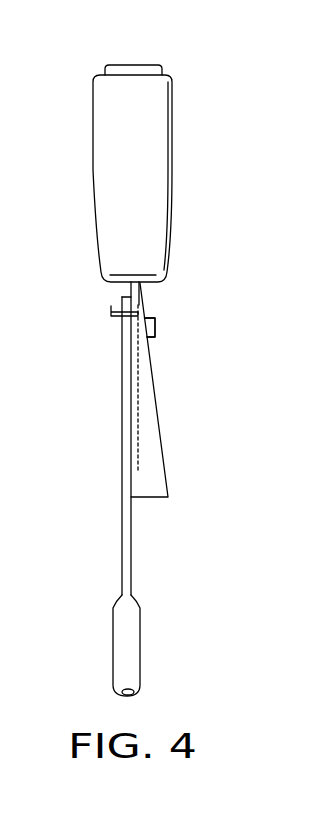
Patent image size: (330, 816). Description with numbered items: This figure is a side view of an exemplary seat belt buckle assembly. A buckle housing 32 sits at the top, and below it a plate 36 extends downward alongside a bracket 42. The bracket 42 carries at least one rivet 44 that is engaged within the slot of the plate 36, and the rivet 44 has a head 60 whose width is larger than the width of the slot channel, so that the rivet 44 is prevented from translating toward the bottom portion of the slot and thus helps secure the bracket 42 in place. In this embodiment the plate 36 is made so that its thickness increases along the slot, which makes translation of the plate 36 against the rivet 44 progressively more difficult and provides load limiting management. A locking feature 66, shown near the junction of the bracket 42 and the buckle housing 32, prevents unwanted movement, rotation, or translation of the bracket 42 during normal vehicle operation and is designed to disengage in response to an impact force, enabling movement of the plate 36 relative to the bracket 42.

The buckle housing 32 is at (172, 163).
The bracket 42 is at (122, 473).
The plate 36 is at (152, 462).
The locking feature 66 is at (110, 313).
The head 60 is at (155, 325).
The rivet 44 is at (155, 325).